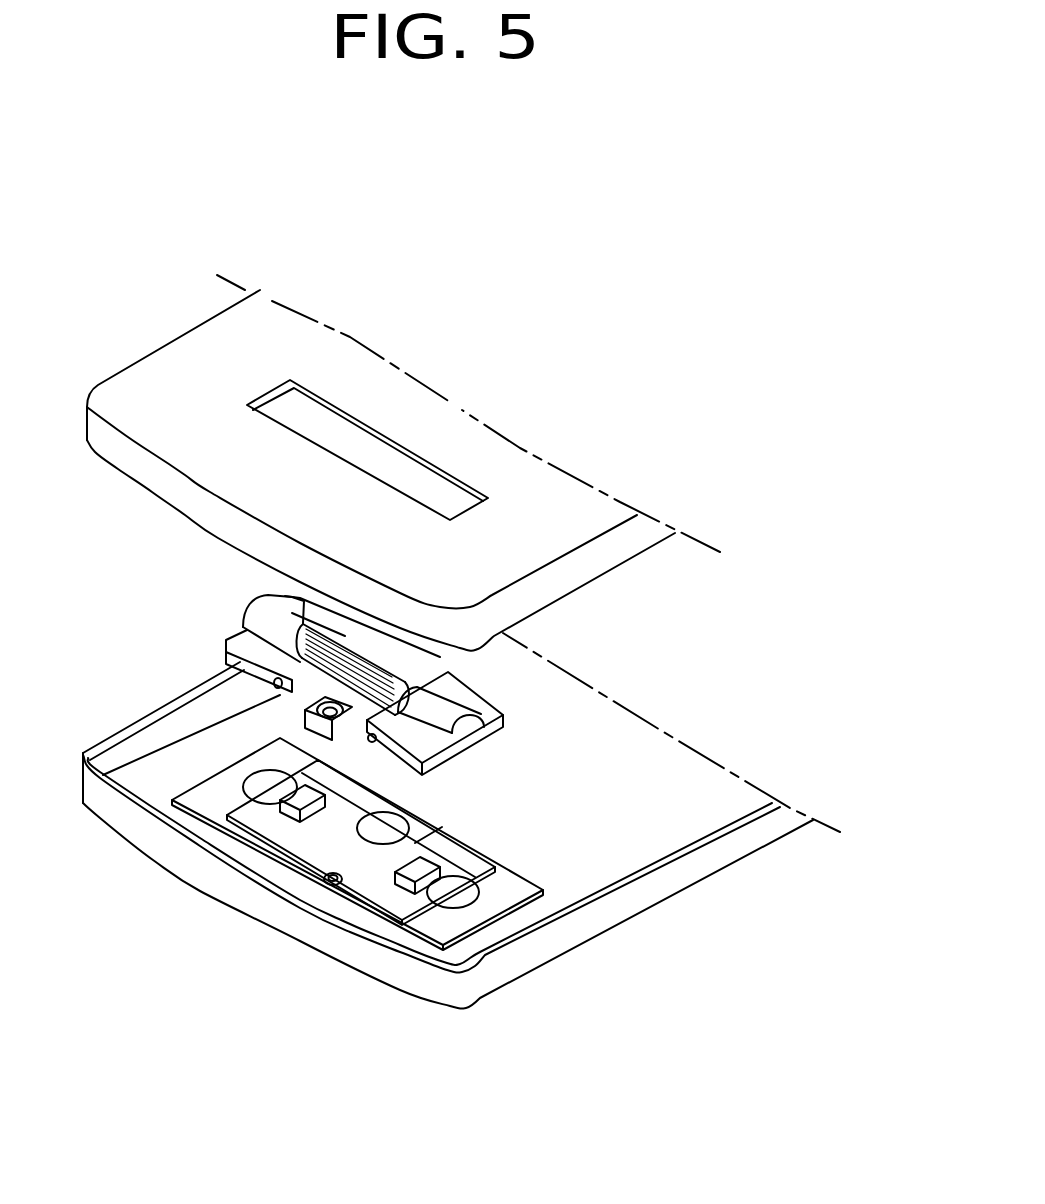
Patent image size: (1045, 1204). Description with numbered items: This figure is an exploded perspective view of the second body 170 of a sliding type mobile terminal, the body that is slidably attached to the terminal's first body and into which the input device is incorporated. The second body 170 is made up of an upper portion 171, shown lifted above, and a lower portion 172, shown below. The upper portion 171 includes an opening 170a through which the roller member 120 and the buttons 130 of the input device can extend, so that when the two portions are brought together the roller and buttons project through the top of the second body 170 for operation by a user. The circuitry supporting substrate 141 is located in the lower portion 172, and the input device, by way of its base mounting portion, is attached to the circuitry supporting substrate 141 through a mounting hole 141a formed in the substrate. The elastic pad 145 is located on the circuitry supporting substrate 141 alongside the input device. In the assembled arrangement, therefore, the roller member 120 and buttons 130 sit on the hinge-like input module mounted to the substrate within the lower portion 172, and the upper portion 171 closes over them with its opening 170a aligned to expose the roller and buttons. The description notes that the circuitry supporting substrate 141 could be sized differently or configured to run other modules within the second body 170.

The second body 170 is at (809, 456).
The window opening 170a is at (352, 452).
The upper portion 171 is at (612, 548).
The lower portion 172 is at (672, 880).
The buttons 130 is at (244, 638).
The roller member 120 is at (290, 662).
The circuitry supporting substrate 141 is at (255, 828).
The elastic pad 145 is at (332, 832).
The mounting hole 141a is at (338, 884).